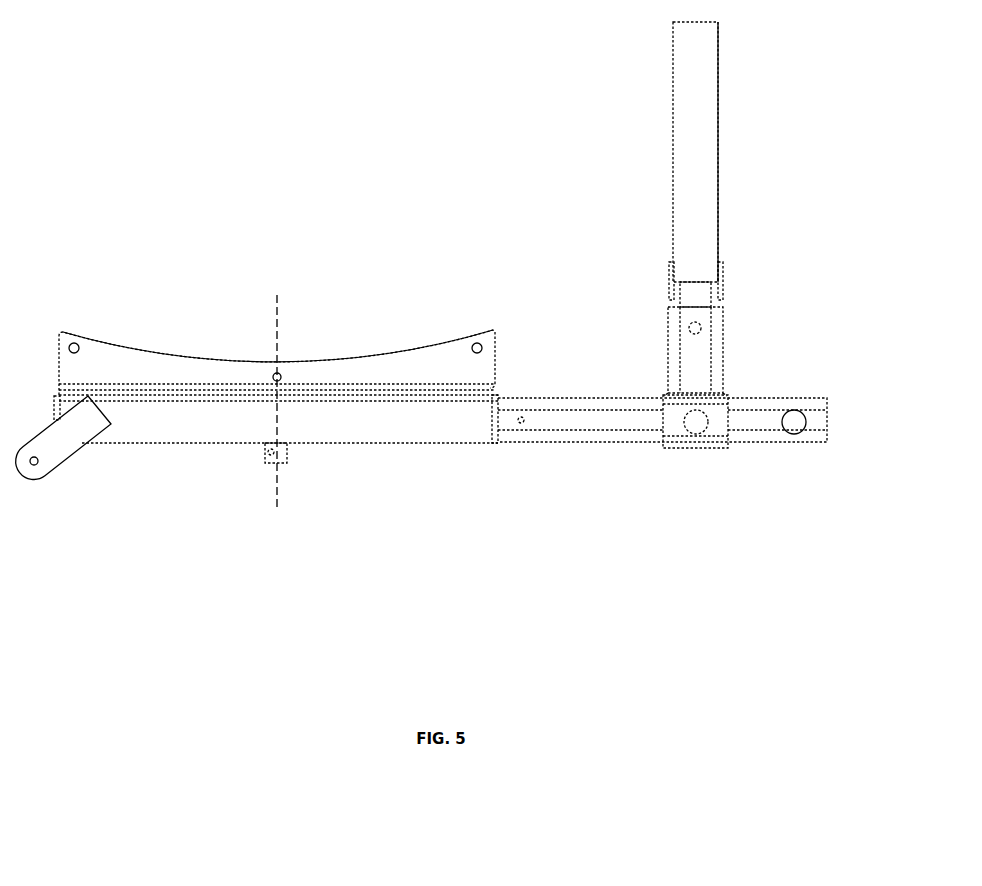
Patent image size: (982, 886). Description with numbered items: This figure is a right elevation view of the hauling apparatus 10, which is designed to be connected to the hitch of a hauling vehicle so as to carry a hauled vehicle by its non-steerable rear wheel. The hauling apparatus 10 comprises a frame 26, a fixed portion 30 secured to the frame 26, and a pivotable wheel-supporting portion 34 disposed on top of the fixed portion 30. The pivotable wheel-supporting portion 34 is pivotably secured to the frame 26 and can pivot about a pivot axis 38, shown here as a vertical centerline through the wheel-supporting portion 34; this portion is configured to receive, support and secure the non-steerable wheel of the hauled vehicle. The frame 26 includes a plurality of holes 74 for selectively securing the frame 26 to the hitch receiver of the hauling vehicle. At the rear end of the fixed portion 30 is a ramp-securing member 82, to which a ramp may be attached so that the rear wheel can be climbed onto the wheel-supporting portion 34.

The hauling apparatus 10 is at (165, 242).
The frame 26 is at (578, 425).
The fixed portion 30 is at (472, 425).
The pivotable wheel-supporting portion 34 is at (377, 372).
The pivot axis 38 is at (276, 415).
The holes 74 is at (697, 432).
The ramp-securing members 82 is at (53, 452).